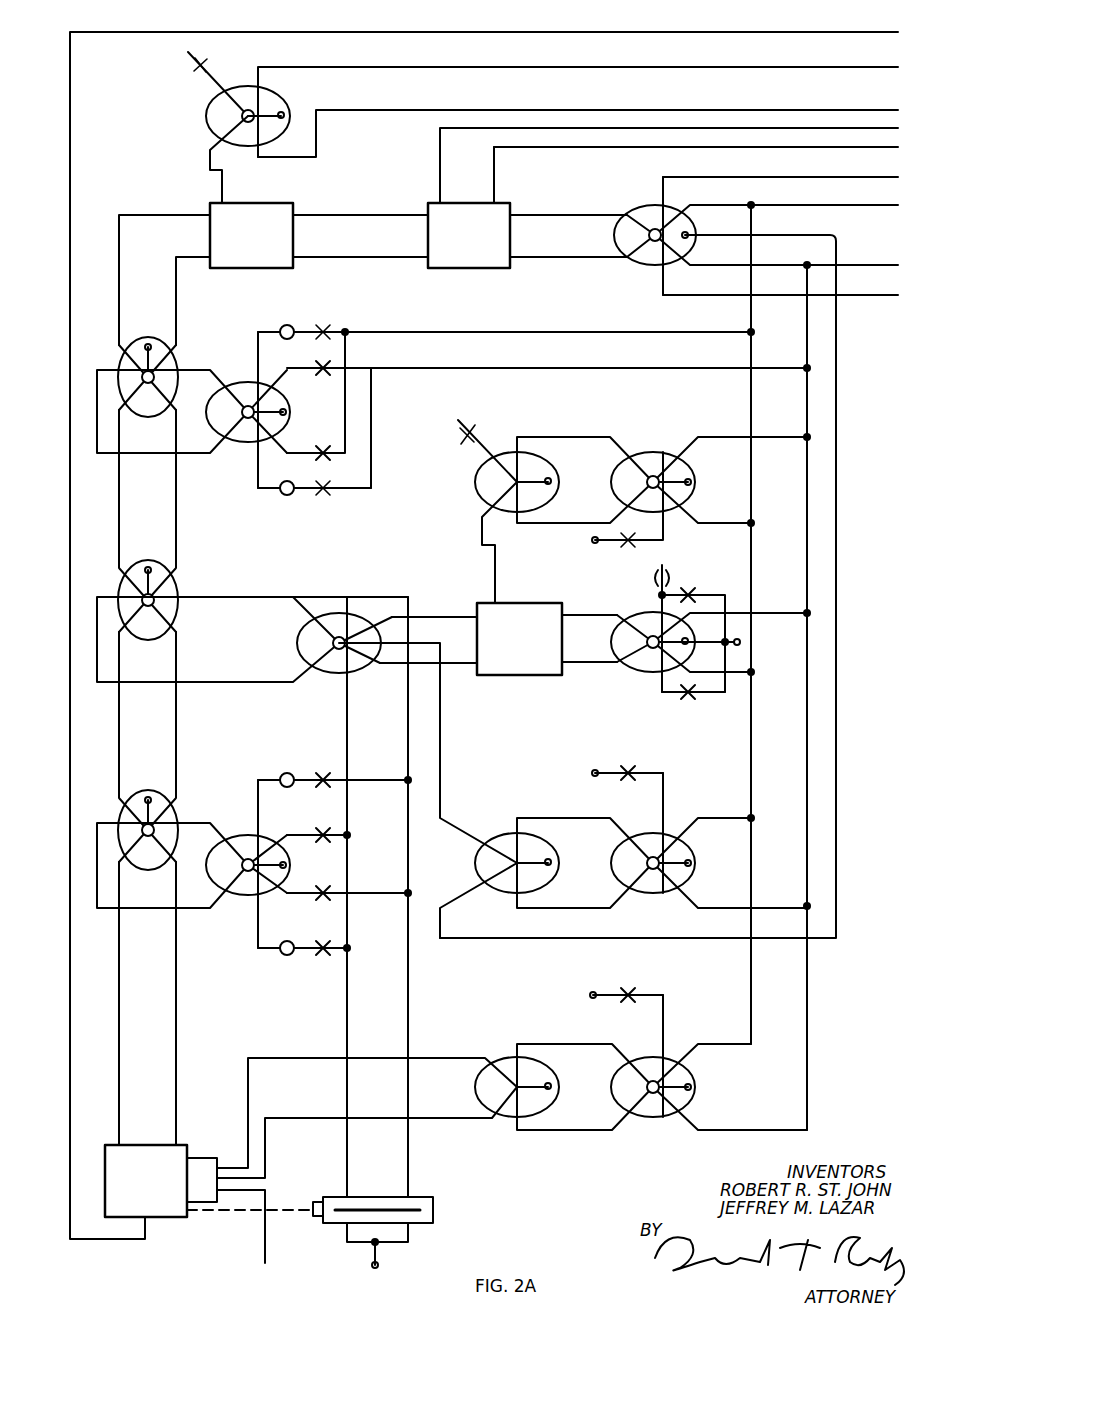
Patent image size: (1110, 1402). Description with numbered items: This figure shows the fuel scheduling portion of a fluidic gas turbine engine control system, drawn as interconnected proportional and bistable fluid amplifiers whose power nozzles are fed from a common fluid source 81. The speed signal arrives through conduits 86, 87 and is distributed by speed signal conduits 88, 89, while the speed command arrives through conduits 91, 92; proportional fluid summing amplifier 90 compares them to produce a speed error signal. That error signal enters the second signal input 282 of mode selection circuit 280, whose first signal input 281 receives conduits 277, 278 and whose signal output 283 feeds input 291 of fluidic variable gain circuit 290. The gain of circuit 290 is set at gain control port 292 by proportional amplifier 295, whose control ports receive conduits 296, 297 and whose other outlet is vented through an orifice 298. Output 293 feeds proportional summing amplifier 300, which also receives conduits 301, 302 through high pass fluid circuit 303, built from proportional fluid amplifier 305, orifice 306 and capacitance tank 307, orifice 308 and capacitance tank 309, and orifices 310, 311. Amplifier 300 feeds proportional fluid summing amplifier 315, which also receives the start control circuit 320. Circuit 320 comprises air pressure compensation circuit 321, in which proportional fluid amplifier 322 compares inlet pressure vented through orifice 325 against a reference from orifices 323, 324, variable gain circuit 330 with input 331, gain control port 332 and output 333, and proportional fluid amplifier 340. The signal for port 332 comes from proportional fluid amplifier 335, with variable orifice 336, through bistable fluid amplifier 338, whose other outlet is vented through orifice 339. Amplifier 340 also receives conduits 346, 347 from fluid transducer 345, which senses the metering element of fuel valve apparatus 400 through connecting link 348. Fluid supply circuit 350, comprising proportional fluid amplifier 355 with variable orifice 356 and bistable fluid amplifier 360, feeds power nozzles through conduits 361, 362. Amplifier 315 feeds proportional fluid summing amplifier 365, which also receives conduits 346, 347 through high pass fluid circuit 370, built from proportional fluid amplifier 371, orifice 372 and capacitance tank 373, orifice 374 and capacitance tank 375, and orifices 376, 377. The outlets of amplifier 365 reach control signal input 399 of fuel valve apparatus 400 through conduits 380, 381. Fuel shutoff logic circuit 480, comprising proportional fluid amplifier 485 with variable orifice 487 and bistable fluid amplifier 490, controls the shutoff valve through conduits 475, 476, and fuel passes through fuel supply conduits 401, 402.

The fuel supply conduit 402 is at (148, 30).
The conduit 296 is at (426, 66).
The conduit 297 is at (426, 110).
The conduit 277 is at (636, 128).
The conduit 278 is at (556, 148).
The first signal input 281 is at (456, 190).
The conduit 91 is at (790, 176).
The conduit 86 is at (872, 204).
The conduit 87 is at (894, 264).
The conduit 92 is at (898, 294).
The conduit 362 is at (837, 568).
The proportional fluid summing amplifier 90 is at (652, 205).
The orifice 298 is at (204, 72).
The proportional amplifier 295 is at (208, 124).
The gain control port 292 is at (226, 196).
The fluidic variable gain circuit 290 is at (251, 235).
The mode selection circuit 280 is at (469, 235).
The output 293 is at (185, 248).
The input 291 is at (310, 246).
The signal output 283 is at (397, 245).
The second signal input 282 is at (528, 245).
The fluid source 81 is at (284, 112).
The proportional summing amplifier 300 is at (178, 360).
The proportional fluid summing amplifier 315 is at (178, 584).
The proportional fluid summing amplifier 365 is at (178, 808).
The conduit 380 is at (119, 1020).
The conduit 381 is at (176, 1082).
The high pass fluid circuit 303 is at (454, 428).
The proportional fluid amplifier 305 is at (250, 442).
The capacitance tank 307 is at (281, 328).
The orifice 306 is at (322, 330).
The conduit 301 is at (610, 336).
The orifice 310 is at (360, 370).
The orifice 311 is at (348, 450).
The conduit 302 is at (650, 368).
The capacitance tank 309 is at (284, 496).
The orifice 308 is at (326, 496).
The orifice 339 is at (470, 426).
The bistable fluid amplifier 338 is at (476, 482).
The proportional fluid amplifier 335 is at (632, 446).
The variable orifice 336 is at (625, 548).
The gain control port 332 is at (496, 598).
The variable gain circuit 330 is at (519, 639).
The output 333 is at (466, 657).
The input 331 is at (580, 660).
The start control circuit 320 is at (604, 631).
The air pressure compensation circuit 321 is at (656, 710).
The proportional fluid amplifier 322 is at (648, 612).
The orifice 325 is at (676, 578).
The orifice 323 is at (692, 588).
The orifice 324 is at (694, 698).
The proportional fluid amplifier 340 is at (298, 636).
The conduit 347 is at (347, 1022).
The conduit 346 is at (408, 990).
The conduit 361 is at (442, 805).
The high pass fluid circuit 370 is at (254, 879).
The proportional fluid amplifier 371 is at (245, 896).
The capacitance tank 373 is at (281, 772).
The orifice 372 is at (324, 768).
The orifice 376 is at (323, 828).
The orifice 377 is at (323, 900).
The capacitance tank 375 is at (284, 956).
The orifice 374 is at (322, 956).
The fluid supply circuit 350 is at (625, 836).
The bistable fluid amplifier 360 is at (508, 895).
The proportional fluid amplifier 355 is at (660, 895).
The variable orifice 356 is at (630, 765).
The speed signal conduit 88 is at (750, 772).
The speed signal conduit 89 is at (807, 722).
The fuel shutoff logic circuit 480 is at (641, 1060).
The bistable fluid amplifier 490 is at (498, 1052).
The proportional fluid amplifier 485 is at (672, 1048).
The variable orifice 487 is at (632, 988).
The conduit 475 is at (308, 1058).
The conduit 476 is at (318, 1116).
The fuel supply conduit 401 is at (266, 1232).
The connecting link 348 is at (283, 1208).
The control signal input 399 is at (167, 1156).
The fuel valve apparatus 400 is at (160, 1128).
The fluid transducer 345 is at (425, 1196).